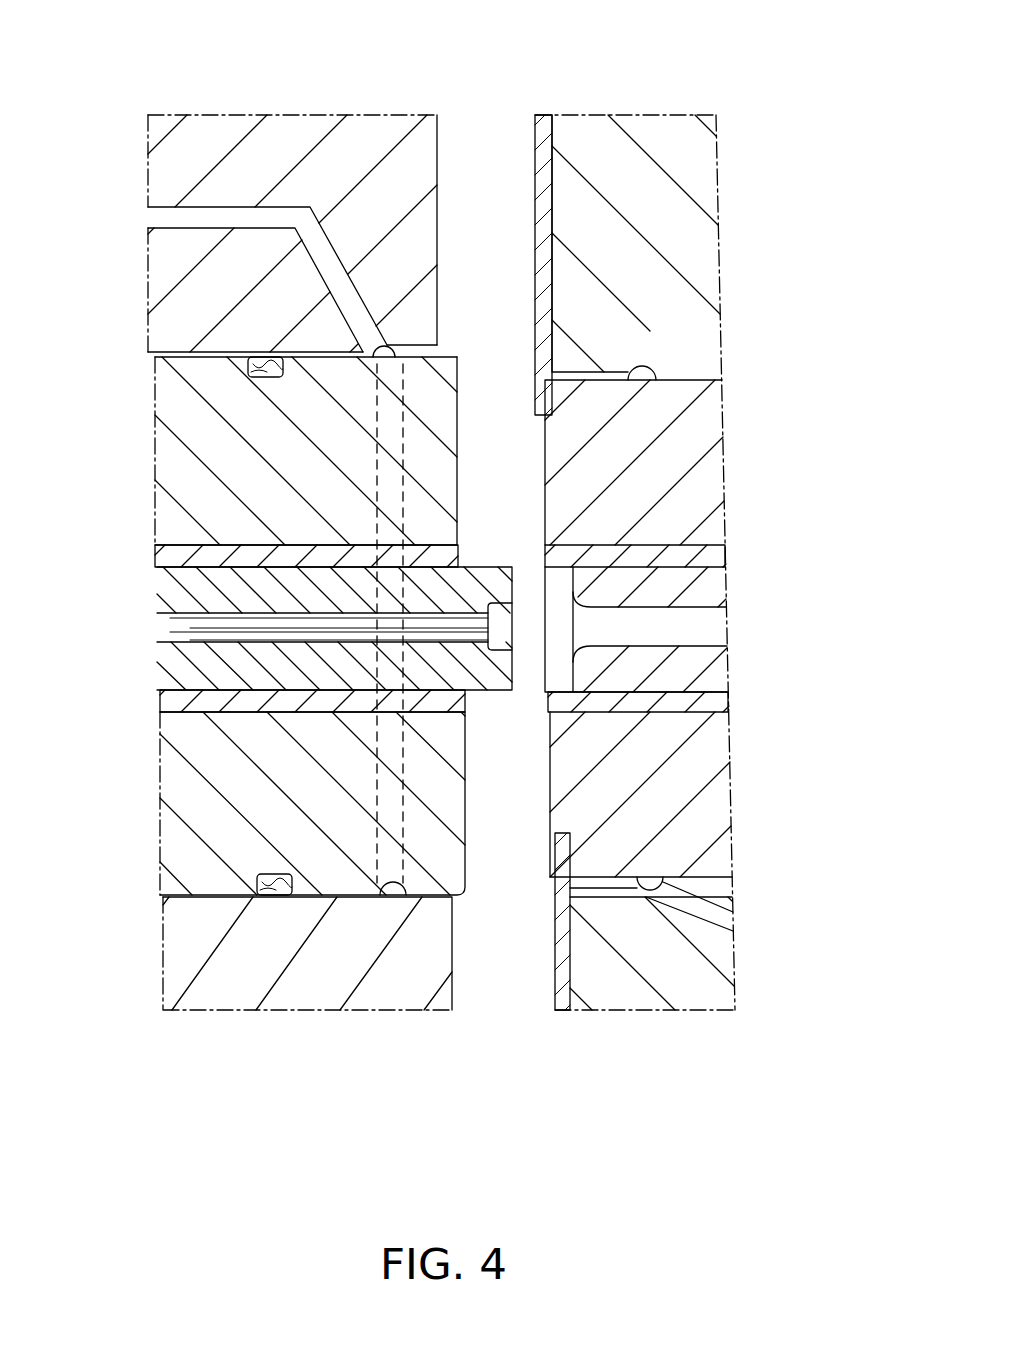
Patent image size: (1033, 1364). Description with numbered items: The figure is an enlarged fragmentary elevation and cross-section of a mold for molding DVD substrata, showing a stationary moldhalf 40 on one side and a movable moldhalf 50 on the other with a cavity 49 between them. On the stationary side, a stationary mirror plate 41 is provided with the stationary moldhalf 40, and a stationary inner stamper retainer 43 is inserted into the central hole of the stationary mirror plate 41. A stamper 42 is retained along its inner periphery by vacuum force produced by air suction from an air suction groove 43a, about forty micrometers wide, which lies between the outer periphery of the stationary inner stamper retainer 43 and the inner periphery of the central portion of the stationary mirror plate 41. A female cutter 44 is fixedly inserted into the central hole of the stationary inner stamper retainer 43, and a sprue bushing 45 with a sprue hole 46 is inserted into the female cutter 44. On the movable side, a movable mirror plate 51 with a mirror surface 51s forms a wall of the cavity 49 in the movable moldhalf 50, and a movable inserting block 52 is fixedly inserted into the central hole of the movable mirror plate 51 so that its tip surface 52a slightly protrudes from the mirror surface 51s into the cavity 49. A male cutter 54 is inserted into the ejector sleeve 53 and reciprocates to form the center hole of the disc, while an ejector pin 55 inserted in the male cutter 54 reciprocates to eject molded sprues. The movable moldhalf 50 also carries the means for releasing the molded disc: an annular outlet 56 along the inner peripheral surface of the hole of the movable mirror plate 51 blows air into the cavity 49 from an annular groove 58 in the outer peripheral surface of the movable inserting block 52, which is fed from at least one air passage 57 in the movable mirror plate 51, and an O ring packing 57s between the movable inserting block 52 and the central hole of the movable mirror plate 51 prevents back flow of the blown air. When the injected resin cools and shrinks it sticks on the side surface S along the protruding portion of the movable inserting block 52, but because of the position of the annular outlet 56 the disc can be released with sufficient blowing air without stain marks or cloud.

The stationary moldhalf 40 is at (687, 117).
The stationary mirror plate 41 is at (707, 360).
The stamper 42 is at (532, 135).
The stationary inner stamper retainer 43 is at (690, 492).
The air suction groove 43a is at (605, 893).
The female cutter 44 is at (700, 555).
The sprue bushing 45 is at (705, 598).
The sprue hole 46 is at (703, 632).
The cavity 49 is at (538, 795).
The movable moldhalf 50 is at (210, 113).
The movable mirror plate 51 is at (218, 178).
The mirror surface 51s is at (437, 157).
The movable inserting block 52 is at (187, 513).
The tip surface 52a is at (460, 422).
The ejector sleeve 53 is at (178, 562).
The male cutter 54 is at (172, 597).
The ejector pin 55 is at (160, 637).
The annular outlet 56 is at (421, 343).
The air passage 57 is at (317, 268).
The O ring packing 57s is at (245, 377).
The annular groove 58 is at (370, 362).
The side surface S is at (448, 350).